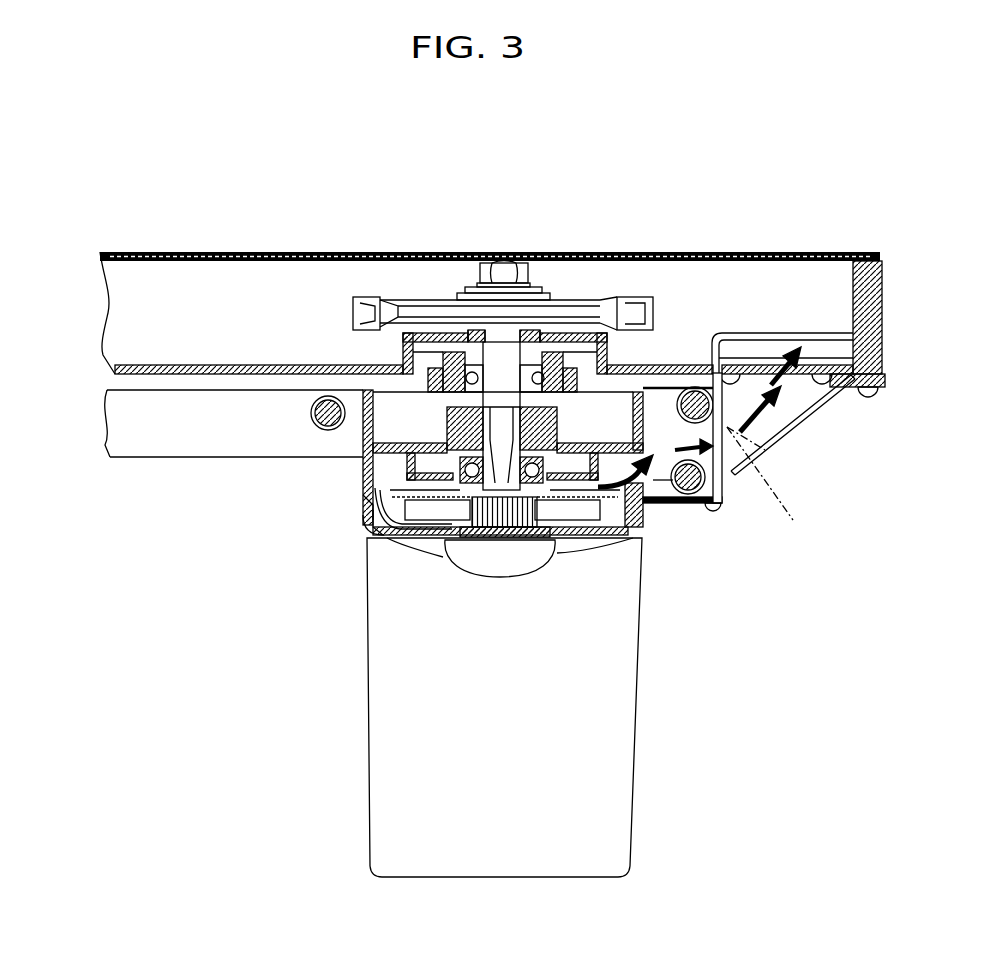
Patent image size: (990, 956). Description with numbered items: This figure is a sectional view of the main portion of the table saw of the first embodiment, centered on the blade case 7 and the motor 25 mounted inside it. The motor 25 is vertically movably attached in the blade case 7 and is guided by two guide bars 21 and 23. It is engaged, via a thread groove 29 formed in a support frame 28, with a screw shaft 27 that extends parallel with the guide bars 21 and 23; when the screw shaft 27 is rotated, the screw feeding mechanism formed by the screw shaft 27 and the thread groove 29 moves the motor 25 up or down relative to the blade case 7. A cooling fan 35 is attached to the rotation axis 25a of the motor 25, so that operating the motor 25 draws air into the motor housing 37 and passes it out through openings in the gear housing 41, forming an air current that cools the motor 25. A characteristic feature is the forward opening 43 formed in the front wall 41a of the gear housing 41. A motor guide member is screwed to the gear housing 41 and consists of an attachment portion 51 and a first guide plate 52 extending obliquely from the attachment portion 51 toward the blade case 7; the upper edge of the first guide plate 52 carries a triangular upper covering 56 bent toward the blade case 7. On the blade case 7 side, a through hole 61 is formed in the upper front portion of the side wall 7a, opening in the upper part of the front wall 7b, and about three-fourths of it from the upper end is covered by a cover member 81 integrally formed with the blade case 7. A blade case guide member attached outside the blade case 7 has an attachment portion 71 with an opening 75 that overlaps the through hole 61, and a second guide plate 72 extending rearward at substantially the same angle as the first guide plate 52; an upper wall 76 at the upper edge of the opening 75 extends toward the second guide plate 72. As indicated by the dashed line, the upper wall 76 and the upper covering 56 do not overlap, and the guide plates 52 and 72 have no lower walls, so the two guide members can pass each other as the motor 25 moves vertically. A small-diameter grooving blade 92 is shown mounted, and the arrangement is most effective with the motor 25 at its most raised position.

The blade case 7 is at (833, 268).
The side wall 7a is at (143, 363).
The front wall 7b is at (833, 268).
The guide bar 21 is at (329, 432).
The guide bar 23 is at (670, 430).
The motor 25 is at (477, 558).
The rotation axis 25a is at (365, 513).
The screw shaft 27 is at (712, 368).
The support frame 28 is at (646, 441).
The thread groove 29 is at (718, 387).
The cooling fan 35 is at (593, 537).
The motor housing 37 is at (617, 718).
The gear housing 41 is at (363, 473).
The front wall 41a is at (690, 503).
The forward opening 43 is at (638, 480).
The attachment portion 51 is at (677, 503).
The first guide plate 52 is at (737, 493).
The upper covering 56 is at (783, 507).
The through hole 61 is at (852, 357).
The attachment portion 71 is at (845, 388).
The second guide plate 72 is at (790, 398).
The opening 75 is at (800, 407).
The upper wall 76 is at (783, 472).
The cover member 81 is at (812, 330).
The grooving blade 92 is at (573, 313).